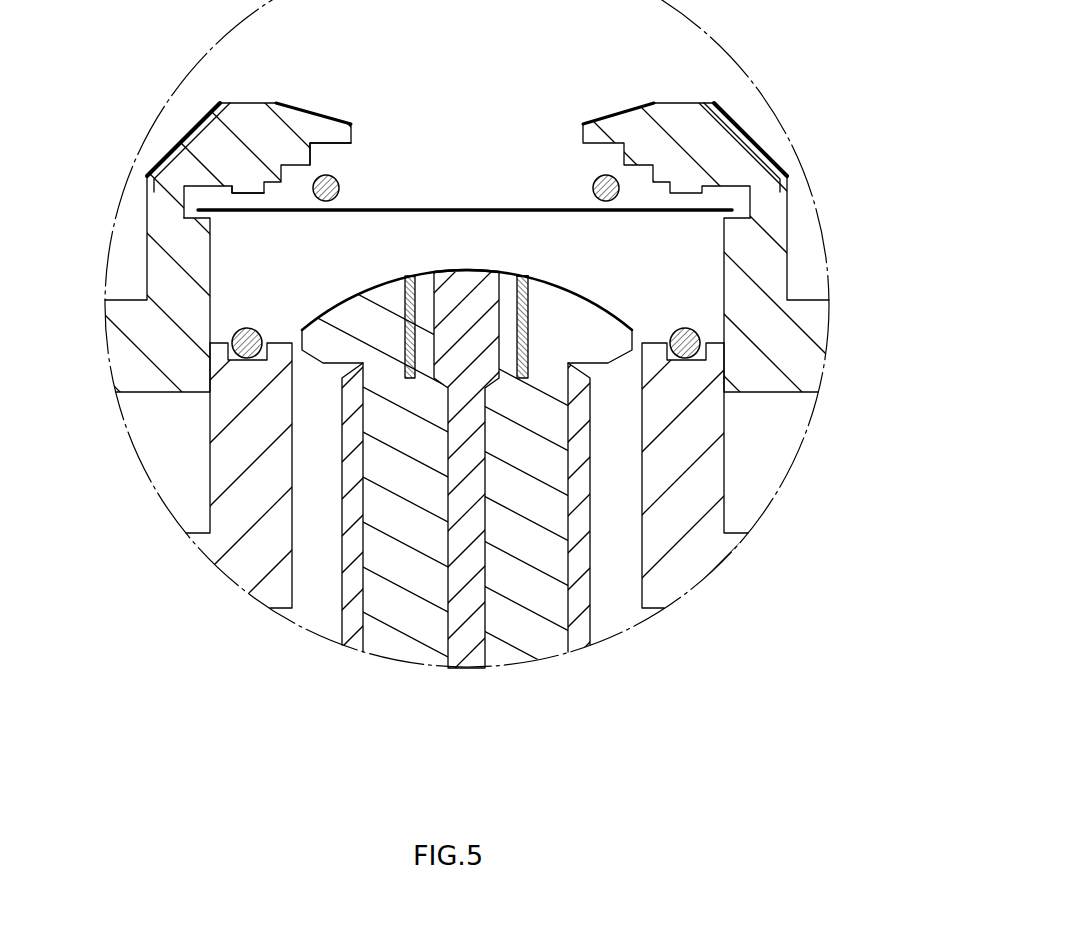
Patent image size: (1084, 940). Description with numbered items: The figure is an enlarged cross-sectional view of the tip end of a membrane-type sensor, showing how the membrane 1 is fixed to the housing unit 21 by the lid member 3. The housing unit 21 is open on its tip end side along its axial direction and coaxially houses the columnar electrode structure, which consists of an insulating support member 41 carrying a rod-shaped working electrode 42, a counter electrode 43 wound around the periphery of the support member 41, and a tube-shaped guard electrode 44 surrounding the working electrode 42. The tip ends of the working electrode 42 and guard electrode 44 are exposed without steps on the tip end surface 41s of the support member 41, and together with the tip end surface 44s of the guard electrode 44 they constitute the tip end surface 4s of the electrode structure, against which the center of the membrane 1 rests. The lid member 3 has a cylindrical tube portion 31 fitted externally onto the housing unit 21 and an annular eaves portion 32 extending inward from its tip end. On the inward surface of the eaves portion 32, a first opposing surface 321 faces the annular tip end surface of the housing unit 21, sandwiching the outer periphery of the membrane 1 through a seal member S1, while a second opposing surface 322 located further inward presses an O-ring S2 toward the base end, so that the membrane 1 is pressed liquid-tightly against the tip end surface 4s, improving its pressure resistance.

The membrane 1 is at (463, 208).
The lid member 3 is at (542, 470).
The cylindrical tube portion 31 is at (788, 218).
The eaves portion 32 is at (750, 139).
The first opposing surface 321 is at (240, 200).
The second opposing surface 322 is at (333, 148).
The housing unit 21 is at (724, 470).
The first seal S1 is at (246, 328).
The O-ring S2 is at (593, 188).
The tip end surface of the electrode structure 4s is at (556, 285).
The support member 41 is at (465, 539).
The tip end surface of the support member 41s is at (477, 270).
The working electrode 42 is at (542, 470).
The counter electrode 43 is at (591, 588).
The guard electrode 44 is at (404, 306).
The tip end surface of the guard electrode 44s is at (522, 276).